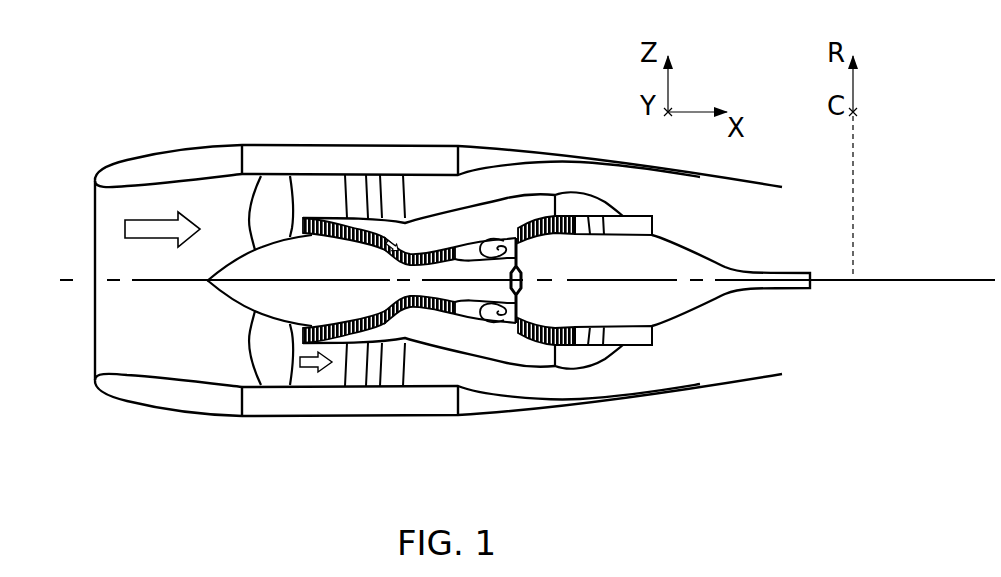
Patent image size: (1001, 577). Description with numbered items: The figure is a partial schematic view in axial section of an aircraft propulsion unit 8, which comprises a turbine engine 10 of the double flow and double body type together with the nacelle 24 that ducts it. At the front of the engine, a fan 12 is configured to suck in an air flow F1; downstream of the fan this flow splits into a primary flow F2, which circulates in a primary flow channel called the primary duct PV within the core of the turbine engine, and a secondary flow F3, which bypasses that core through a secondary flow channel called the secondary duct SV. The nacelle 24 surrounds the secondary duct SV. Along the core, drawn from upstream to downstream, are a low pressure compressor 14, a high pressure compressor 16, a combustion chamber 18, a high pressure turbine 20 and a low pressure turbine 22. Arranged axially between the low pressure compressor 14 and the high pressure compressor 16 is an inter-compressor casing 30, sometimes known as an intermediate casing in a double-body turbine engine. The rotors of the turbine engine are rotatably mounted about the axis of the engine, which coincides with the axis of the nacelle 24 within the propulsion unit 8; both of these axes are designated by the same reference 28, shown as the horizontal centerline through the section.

The aircraft propulsion unit 8 is at (236, 136).
The turbine engine 10 is at (767, 327).
The fan 12 is at (265, 348).
The low pressure compressor 14 is at (318, 216).
The high pressure compressor 16 is at (432, 252).
The combustion chamber 18 is at (492, 239).
The high pressure turbine 20 is at (520, 236).
The low pressure turbine 22 is at (576, 214).
The nacelle 24 is at (277, 143).
The axis 28 is at (77, 277).
The inter-compressor casing 30 is at (409, 364).
The air flow F1 is at (145, 222).
The primary flow F2 is at (397, 240).
The secondary flow F3 is at (308, 364).
The secondary duct SV is at (332, 378).
The primary duct PV is at (393, 332).